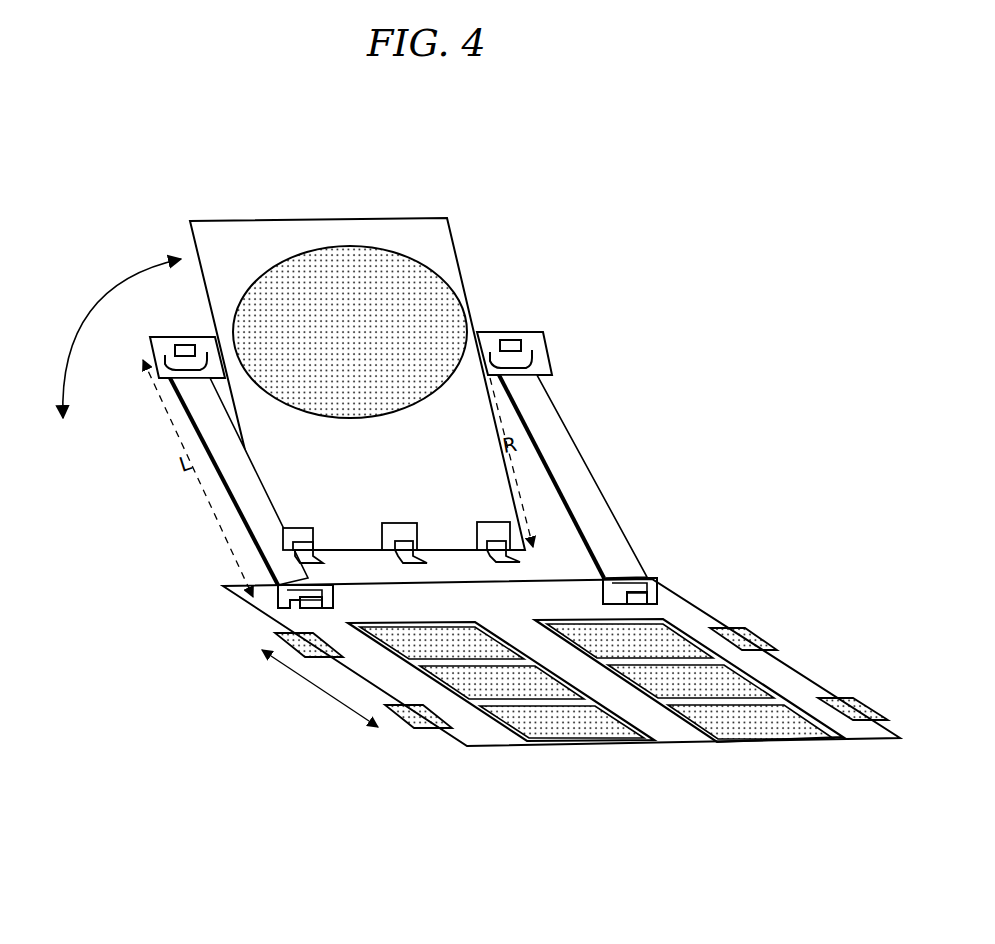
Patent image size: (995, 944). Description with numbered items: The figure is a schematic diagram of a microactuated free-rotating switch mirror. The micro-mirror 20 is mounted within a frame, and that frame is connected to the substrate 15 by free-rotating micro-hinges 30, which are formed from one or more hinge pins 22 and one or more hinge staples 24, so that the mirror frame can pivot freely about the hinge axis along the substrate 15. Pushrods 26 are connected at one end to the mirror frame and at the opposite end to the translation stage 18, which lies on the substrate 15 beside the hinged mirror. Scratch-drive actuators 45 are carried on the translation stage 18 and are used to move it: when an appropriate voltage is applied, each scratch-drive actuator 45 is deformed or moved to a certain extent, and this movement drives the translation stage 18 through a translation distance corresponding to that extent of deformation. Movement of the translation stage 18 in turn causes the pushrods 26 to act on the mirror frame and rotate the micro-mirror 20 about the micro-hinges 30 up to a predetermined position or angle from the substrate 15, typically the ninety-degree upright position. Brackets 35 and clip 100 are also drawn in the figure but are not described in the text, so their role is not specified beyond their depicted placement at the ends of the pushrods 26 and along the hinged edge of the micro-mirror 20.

The micro-mirror 20 is at (418, 240).
The hinge brackets 35 is at (548, 360).
The pushrods 26 is at (257, 503).
The clip 100 is at (381, 546).
The free-rotating micro-hinges 30 is at (428, 540).
The hinge pins 22 is at (483, 548).
The hinge staples 24 is at (402, 554).
The substrate 15 is at (503, 572).
The translation stage 18 is at (795, 680).
The scratch-drive actuators 45 is at (567, 735).